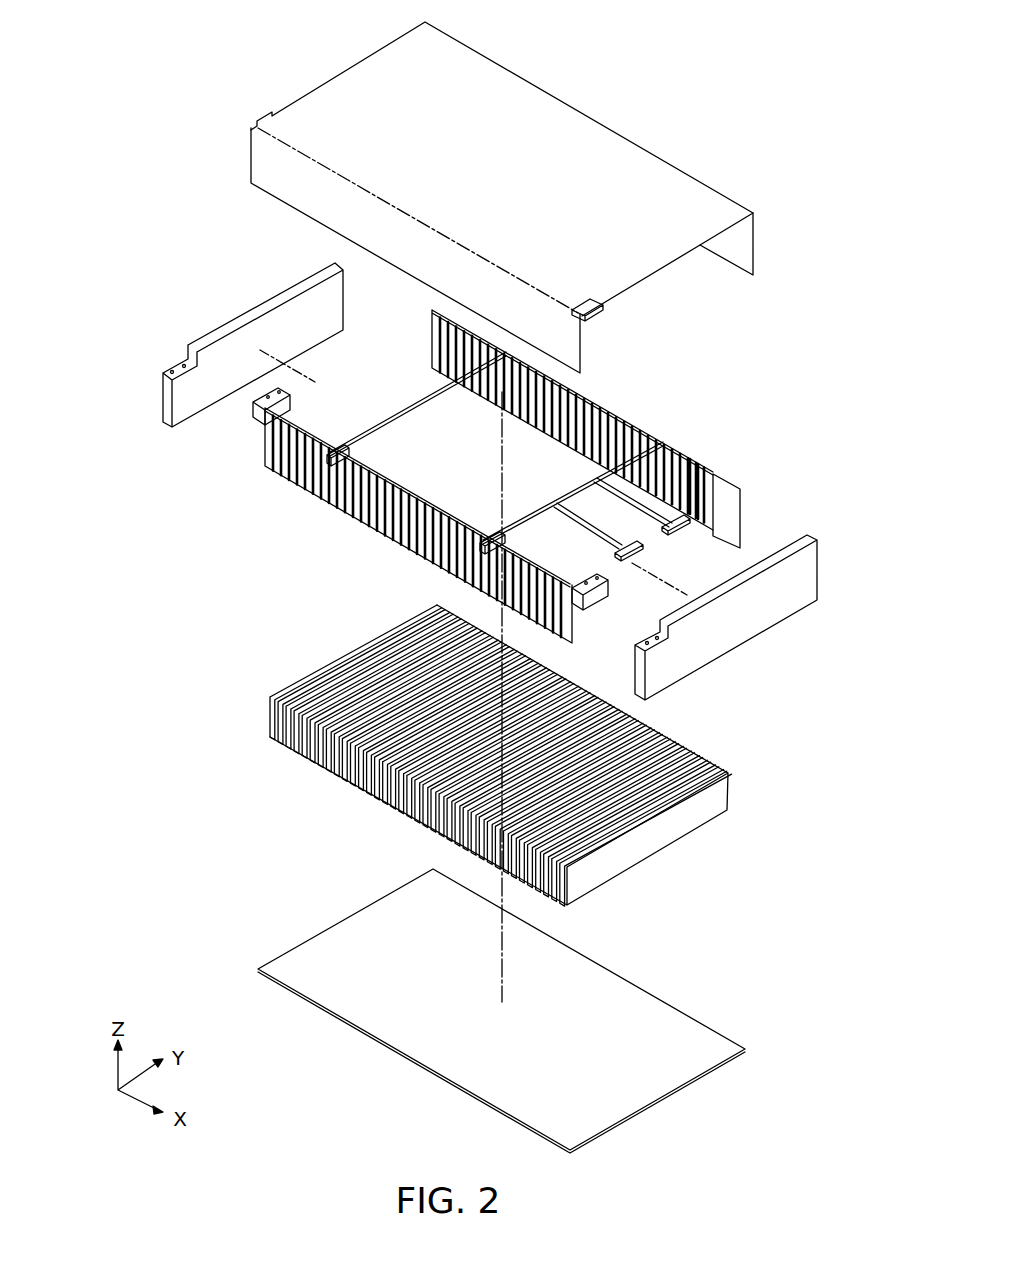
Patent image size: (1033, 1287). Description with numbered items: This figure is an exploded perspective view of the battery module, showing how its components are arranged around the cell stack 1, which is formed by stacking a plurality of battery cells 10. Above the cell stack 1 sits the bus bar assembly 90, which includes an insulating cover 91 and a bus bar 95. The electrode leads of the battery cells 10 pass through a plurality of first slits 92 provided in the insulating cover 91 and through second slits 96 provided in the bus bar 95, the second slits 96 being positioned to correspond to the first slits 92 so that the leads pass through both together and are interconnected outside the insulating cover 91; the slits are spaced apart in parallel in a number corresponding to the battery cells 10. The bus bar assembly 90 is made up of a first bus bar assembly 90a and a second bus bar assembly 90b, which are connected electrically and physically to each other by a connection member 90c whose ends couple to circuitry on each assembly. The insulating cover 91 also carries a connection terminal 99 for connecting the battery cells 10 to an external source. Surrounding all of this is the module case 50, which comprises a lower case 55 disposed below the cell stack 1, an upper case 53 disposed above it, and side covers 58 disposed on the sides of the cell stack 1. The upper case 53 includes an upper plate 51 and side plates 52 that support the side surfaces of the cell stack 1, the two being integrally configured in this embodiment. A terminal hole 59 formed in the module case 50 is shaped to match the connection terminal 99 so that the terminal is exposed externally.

The cell stack 1 is at (745, 790).
The battery cell 10 is at (684, 826).
The module case 50 is at (82, 292).
The upper plate 51 is at (628, 157).
The side plate 52 is at (738, 240).
The upper case 53 is at (288, 204).
The lower case 55 is at (348, 921).
The side cover 58 is at (753, 622).
The terminal hole 59 is at (590, 306).
The bus bar assembly 90 is at (815, 318).
The first bus bar assembly 90a is at (310, 501).
The second bus bar assembly 90b is at (603, 408).
The connection member 90c is at (580, 485).
The insulating cover 91 is at (746, 510).
The first slit 92 is at (708, 490).
The bus bar 95 is at (268, 447).
The second slit 96 is at (372, 528).
The connection terminal 99 is at (594, 596).